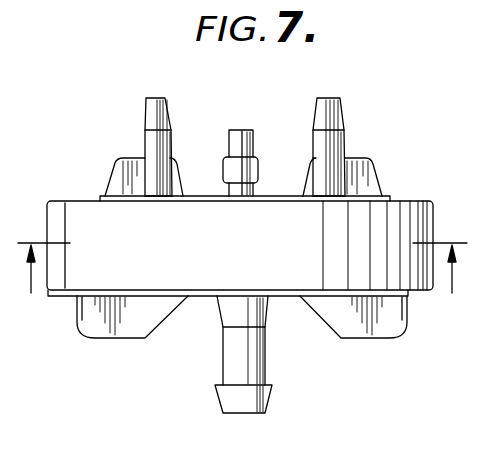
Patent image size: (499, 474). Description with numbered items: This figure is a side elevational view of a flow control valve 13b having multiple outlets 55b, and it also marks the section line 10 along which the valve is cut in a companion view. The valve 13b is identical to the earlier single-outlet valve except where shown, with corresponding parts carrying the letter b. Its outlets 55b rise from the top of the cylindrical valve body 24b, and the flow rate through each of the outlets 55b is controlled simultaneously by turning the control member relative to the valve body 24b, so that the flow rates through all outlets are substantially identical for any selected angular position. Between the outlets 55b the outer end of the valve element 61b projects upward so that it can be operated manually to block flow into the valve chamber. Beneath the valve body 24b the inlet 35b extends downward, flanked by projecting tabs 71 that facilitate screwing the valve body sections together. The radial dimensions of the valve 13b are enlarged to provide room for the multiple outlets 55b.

The section line 10- 10 is at (247, 286).
The flow control valve 13b is at (356, 112).
The valve body 24b is at (436, 213).
The inlet 35b is at (250, 414).
The outlets 55b is at (316, 125).
The valve element 61b is at (259, 170).
The projecting tabs 71 is at (138, 323).